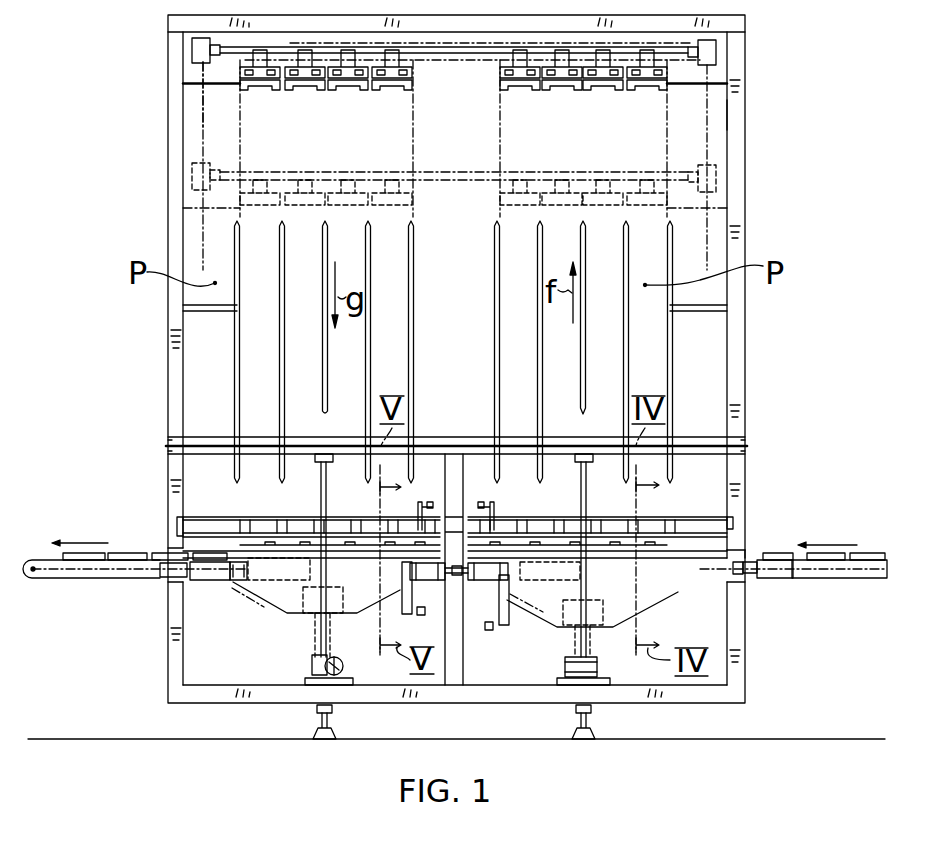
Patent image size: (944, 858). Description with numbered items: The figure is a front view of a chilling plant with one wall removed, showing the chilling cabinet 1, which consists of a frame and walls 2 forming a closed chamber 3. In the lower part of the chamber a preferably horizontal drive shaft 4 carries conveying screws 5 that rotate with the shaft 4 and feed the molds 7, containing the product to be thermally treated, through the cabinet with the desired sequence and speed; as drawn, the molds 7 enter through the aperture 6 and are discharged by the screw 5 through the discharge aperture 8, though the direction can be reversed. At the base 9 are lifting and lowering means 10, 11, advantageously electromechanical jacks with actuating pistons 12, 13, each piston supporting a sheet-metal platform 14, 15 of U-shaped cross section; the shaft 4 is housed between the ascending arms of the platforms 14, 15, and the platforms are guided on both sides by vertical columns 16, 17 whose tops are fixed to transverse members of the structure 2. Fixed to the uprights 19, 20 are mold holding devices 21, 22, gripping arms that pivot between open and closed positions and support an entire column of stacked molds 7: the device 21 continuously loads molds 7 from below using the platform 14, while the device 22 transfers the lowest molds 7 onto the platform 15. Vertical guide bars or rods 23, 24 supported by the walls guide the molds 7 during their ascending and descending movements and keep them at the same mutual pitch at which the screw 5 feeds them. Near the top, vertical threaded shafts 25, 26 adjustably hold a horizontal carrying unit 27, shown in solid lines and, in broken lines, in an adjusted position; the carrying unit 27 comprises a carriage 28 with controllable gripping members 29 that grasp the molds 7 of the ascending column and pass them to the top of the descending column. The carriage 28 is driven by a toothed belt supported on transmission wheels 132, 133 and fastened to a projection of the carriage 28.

The chilling cabinet 1 is at (748, 101).
The frame and walls 2 is at (419, 21).
The closed chamber 3 is at (344, 163).
The drive shaft 4 is at (757, 574).
The conveying screws 5 is at (127, 571).
The aperture 6 is at (733, 550).
The molds 7 is at (667, 88).
The discharge aperture 8 is at (175, 550).
The base 9 is at (213, 683).
The lifting and lowering means 10 is at (563, 667).
The lifting and lowering means 11 is at (310, 662).
The actuating piston 12 is at (568, 658).
The actuating piston 13 is at (320, 644).
The platform 14 is at (643, 600).
The platform 15 is at (287, 594).
The vertical column 16 is at (601, 562).
The vertical column 17 is at (367, 562).
The upright 19 is at (178, 385).
The upright 20 is at (733, 393).
The mold holding device 21 is at (662, 517).
The mold holding device 22 is at (258, 518).
The vertical guide bar 23 is at (282, 420).
The vertical guide bar 24 is at (626, 402).
The threaded shaft 25 is at (194, 129).
The threaded shaft 26 is at (707, 120).
The carrying unit 27 is at (472, 73).
The carriage 28 is at (561, 70).
The gripping members 29 is at (518, 70).
The transmission wheel 132 is at (604, 78).
The transmission wheel 133 is at (307, 88).